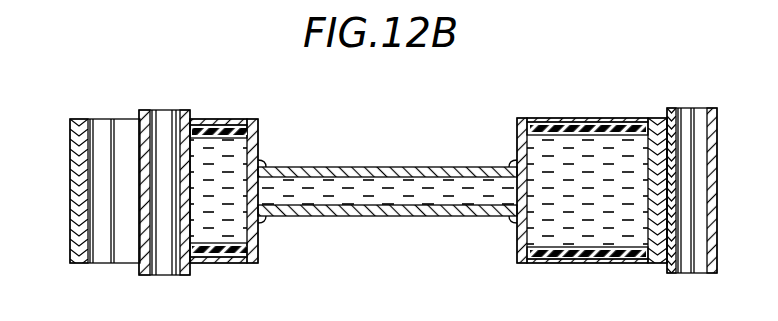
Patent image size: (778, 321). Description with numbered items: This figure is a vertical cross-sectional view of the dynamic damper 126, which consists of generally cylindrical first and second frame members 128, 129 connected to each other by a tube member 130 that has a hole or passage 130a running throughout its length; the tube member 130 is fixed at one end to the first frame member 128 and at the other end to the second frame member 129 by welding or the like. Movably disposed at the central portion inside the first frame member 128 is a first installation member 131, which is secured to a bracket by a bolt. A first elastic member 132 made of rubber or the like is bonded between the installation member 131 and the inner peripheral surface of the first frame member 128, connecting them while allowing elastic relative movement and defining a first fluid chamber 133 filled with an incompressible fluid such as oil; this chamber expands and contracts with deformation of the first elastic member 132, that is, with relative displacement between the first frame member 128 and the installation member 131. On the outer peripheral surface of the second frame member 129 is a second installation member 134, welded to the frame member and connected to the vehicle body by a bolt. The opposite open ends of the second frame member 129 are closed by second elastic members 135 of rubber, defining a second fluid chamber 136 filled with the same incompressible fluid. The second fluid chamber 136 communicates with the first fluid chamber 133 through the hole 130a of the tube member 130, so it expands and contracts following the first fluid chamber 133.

The dynamic damper 126 is at (316, 158).
The first frame member 128 is at (72, 180).
The second frame member 129 is at (519, 124).
The tube member 130 is at (383, 170).
The hole 130a is at (400, 208).
The first installation member 131 is at (145, 268).
The first elastic member 132 is at (217, 128).
The first fluid chamber 133 is at (215, 245).
The second installation member 134 is at (716, 121).
The second elastic member 135 is at (587, 126).
The second fluid chamber 136 is at (600, 256).